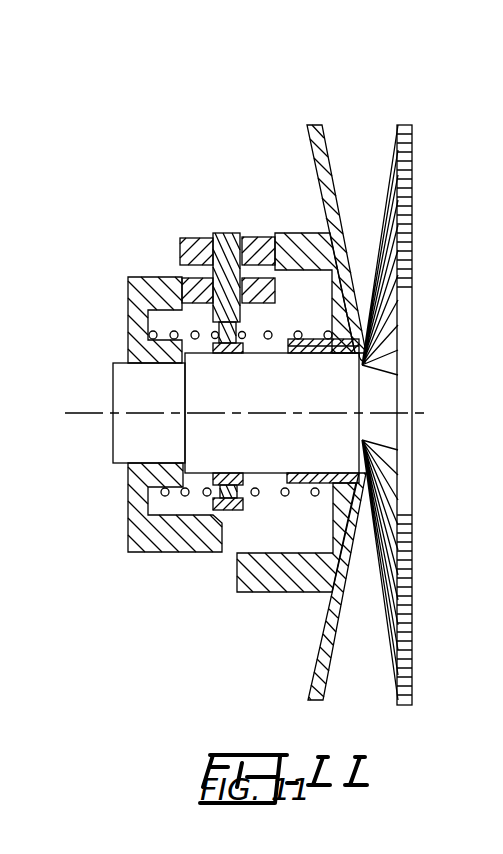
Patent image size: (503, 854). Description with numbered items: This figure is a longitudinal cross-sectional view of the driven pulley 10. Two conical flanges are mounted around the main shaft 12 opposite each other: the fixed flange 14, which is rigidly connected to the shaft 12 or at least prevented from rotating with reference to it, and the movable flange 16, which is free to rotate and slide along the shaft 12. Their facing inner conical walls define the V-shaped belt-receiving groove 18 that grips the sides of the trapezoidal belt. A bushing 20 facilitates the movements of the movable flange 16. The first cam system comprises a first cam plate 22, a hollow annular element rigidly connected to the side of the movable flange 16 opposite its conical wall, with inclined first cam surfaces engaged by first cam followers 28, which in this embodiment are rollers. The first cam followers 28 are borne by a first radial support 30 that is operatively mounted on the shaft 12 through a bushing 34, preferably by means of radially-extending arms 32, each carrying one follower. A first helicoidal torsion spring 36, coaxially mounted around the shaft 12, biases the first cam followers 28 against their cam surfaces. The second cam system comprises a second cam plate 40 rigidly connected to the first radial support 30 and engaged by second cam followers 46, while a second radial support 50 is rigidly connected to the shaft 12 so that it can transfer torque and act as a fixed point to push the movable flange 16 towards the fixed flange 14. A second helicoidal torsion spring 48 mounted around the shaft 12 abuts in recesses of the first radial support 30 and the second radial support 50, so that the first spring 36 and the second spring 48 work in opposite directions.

The driven pulley 10 is at (94, 99).
The main shaft 12 is at (113, 433).
The fixed flange 14 is at (412, 168).
The movable flange 16 is at (312, 125).
The belt-receiving groove 18 is at (372, 167).
The bushing 20 is at (362, 365).
The first cam plate 22 is at (297, 233).
The first cam followers 28 is at (246, 233).
The first radial support 30 is at (220, 233).
The radially-extending arms 32 is at (210, 235).
The bushing 34 is at (222, 353).
The first spring 36 is at (270, 343).
The second cam plate 40 is at (128, 277).
The second cam followers 46 is at (182, 277).
The second spring 48 is at (190, 368).
The second radial support 50 is at (127, 505).